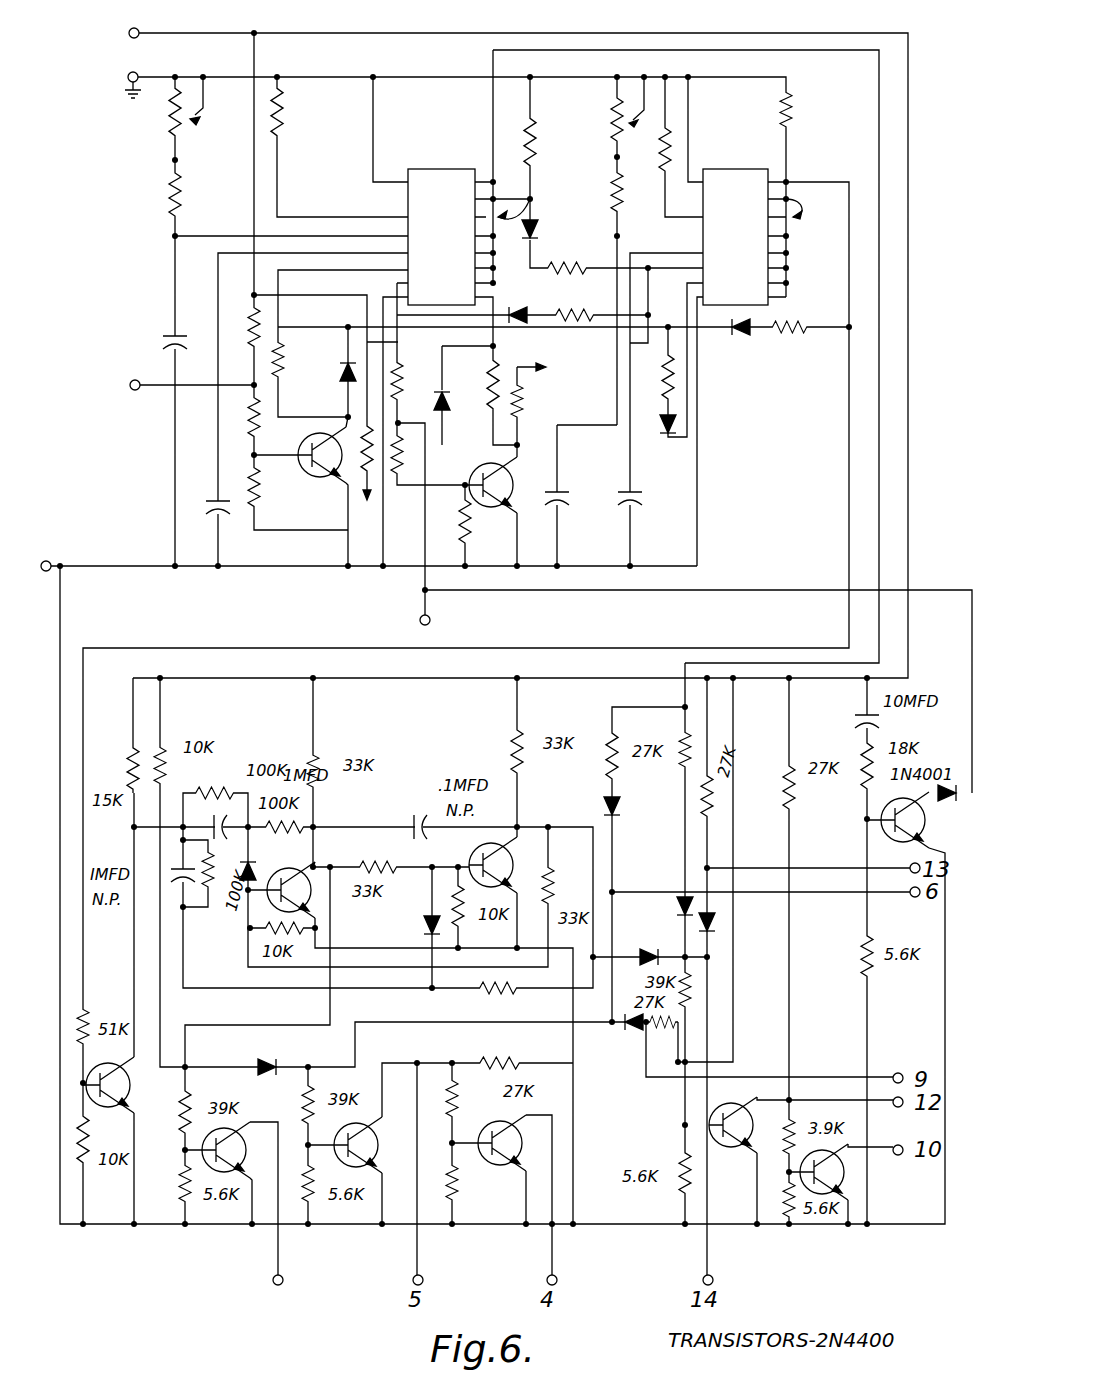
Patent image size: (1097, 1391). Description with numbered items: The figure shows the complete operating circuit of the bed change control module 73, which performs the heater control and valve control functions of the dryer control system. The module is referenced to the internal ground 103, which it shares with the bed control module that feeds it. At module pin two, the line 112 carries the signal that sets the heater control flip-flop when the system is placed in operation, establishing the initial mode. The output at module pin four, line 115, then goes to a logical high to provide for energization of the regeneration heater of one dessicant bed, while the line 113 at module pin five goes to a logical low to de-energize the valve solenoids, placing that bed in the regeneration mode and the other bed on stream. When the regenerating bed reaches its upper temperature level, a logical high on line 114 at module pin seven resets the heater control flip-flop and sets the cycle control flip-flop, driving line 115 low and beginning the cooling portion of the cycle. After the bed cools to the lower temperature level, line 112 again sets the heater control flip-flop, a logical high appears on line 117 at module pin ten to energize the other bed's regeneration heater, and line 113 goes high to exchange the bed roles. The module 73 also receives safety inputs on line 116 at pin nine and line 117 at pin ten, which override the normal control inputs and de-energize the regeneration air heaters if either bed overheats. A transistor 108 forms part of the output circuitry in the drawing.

The bed change control module 73 is at (560, 20).
The internal ground 103 is at (148, 77).
The line 112 is at (155, 392).
The line 114 is at (418, 614).
The transistor 108 is at (912, 864).
The line 113 is at (272, 1268).
The line 115 is at (556, 1265).
The line 116 is at (882, 1074).
The line 117 is at (888, 1152).